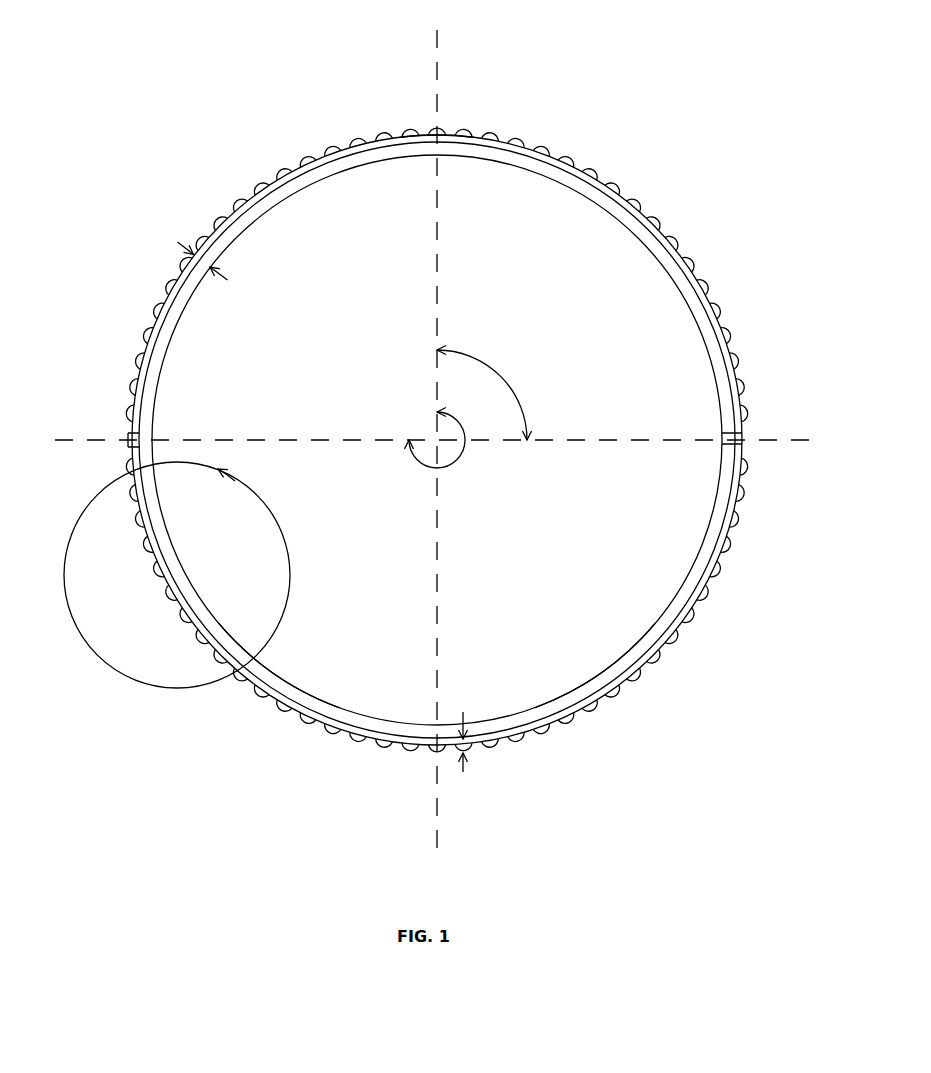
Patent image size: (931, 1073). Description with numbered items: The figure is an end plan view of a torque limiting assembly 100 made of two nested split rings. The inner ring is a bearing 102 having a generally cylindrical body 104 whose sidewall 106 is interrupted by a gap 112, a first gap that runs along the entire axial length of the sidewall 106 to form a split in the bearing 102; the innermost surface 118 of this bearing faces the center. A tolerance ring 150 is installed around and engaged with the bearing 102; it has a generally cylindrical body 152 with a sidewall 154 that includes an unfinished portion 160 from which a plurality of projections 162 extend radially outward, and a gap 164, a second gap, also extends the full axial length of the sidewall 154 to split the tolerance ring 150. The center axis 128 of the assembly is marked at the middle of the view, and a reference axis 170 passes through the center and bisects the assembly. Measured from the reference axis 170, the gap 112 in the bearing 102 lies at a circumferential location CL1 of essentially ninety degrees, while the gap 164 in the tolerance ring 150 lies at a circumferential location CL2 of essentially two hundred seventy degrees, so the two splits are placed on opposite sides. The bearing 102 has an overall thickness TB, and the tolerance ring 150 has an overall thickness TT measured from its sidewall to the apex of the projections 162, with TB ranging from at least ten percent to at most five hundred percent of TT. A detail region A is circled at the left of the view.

The torque limiting assembly 100 is at (395, 417).
The bearing 102 is at (594, 673).
The body 104 is at (290, 683).
The sidewall 106 is at (266, 213).
The gap 112 is at (720, 447).
The inner surface 118 is at (522, 168).
The center axis 128 is at (432, 436).
The tolerance ring 150 is at (270, 179).
The body 152 is at (530, 739).
The sidewall 154 is at (243, 686).
The unfinished portion 160 is at (421, 133).
The projections 162 is at (491, 129).
The gap 164 is at (127, 440).
The reference axis 170 is at (437, 32).
The detail area A is at (177, 575).
The circumferential location CL1 is at (482, 395).
The circumferential location CL2 is at (440, 444).
The overall thickness TB is at (222, 276).
The overall thickness TT is at (466, 769).